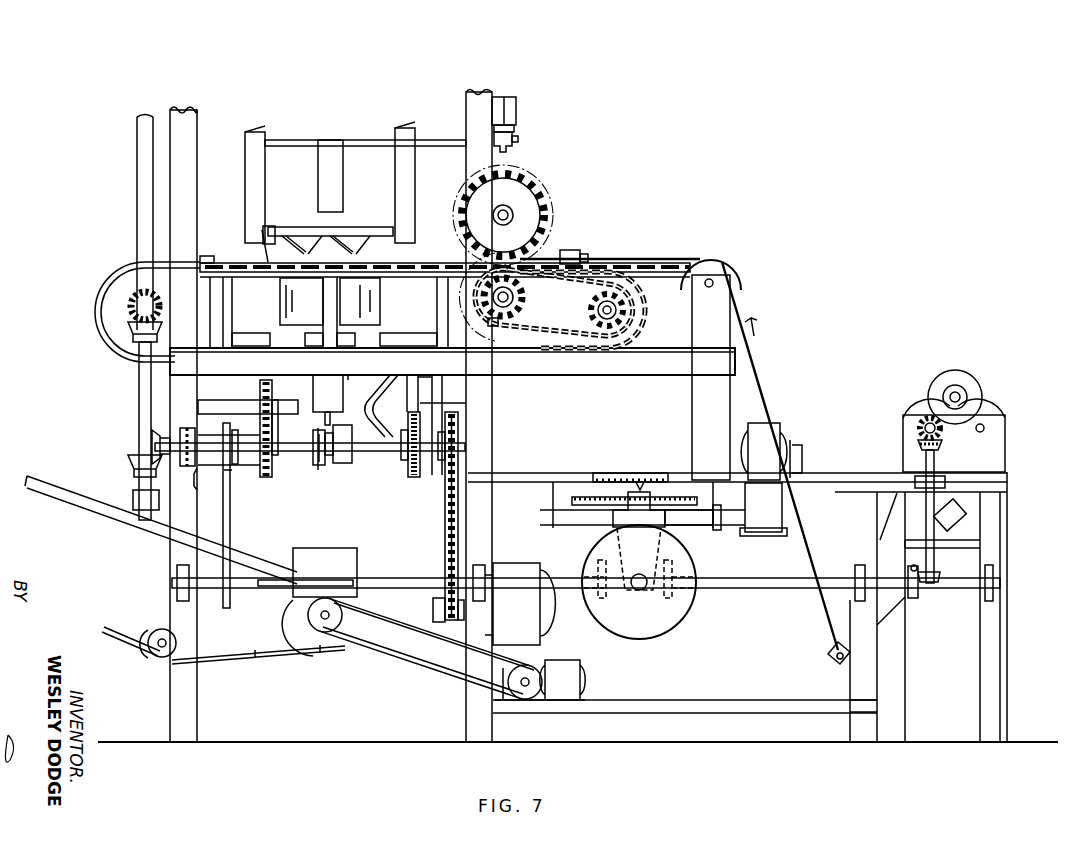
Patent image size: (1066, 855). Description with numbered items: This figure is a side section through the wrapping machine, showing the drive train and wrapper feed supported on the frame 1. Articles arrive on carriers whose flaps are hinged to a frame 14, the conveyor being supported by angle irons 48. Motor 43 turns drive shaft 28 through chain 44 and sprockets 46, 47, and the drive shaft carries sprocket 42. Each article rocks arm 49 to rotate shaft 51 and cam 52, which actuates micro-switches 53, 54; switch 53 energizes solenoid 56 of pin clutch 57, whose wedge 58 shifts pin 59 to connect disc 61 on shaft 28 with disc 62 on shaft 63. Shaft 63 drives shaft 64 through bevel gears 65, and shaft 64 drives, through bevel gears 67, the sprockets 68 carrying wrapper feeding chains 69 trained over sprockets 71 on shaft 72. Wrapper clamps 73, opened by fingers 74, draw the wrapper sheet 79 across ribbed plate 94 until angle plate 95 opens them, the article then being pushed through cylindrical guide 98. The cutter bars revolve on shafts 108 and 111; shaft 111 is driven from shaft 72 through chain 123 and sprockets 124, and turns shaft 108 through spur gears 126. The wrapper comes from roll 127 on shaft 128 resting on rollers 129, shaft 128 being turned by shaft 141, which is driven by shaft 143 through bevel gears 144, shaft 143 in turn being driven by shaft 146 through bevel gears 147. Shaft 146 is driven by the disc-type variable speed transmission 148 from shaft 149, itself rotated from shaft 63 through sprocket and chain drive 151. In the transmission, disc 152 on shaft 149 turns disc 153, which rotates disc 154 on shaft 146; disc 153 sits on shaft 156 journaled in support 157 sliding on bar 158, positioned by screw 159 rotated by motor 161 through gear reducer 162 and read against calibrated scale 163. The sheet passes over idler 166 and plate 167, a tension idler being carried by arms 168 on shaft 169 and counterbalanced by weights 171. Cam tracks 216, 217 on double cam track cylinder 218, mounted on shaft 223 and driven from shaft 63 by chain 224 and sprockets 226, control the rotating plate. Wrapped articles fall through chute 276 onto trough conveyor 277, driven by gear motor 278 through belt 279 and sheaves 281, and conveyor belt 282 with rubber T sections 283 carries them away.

The frame 1 is at (200, 716).
The frame 14 is at (330, 229).
The drive shaft 28 is at (362, 524).
The sprocket 42 is at (410, 470).
The motor 43 is at (542, 615).
The chain 44 is at (445, 538).
The sprocket 46 is at (445, 470).
The sprocket 47 is at (440, 600).
The angle irons 48 is at (262, 242).
The arm 49 is at (340, 183).
The shaft 51 is at (425, 140).
The cam 52 is at (520, 140).
The micro-switch 53 is at (498, 108).
The micro-switch 54 is at (514, 102).
The solenoid 56 is at (328, 393).
The pin clutch 57 is at (321, 474).
The wedge 58 is at (331, 420).
The pin 59 is at (314, 438).
The disc 61 is at (341, 465).
The disc 62 is at (277, 455).
The shaft 63 is at (236, 452).
The shaft 64 is at (138, 414).
The bevel gears 65 is at (132, 462).
The bevel gears 67 is at (128, 326).
The sprockets 68 is at (122, 284).
The wrapper feeding chains 69 is at (218, 262).
The sprockets 71 is at (636, 296).
The shaft 72 is at (607, 314).
The wrapper clamps 73 is at (578, 255).
The fingers 74 is at (596, 261).
The wrapper sheet 79 is at (767, 388).
The plate 94 is at (242, 272).
The angle plate 95 is at (204, 256).
The cylindrical guide 98 is at (372, 300).
The shaft 108 is at (508, 212).
The shaft 111 is at (512, 322).
The chain 123 is at (537, 326).
The sprockets 124 is at (503, 302).
The spur gears 126 is at (548, 222).
The roll 127 is at (950, 378).
The shaft 128 is at (962, 395).
The rollers 129 is at (990, 411).
The shaft 141 is at (916, 428).
The shaft 143 is at (925, 460).
The bevel gears 144 is at (917, 443).
The shaft 146 is at (790, 584).
The bevel gears 147 is at (936, 586).
The variable speed transmission device 148 is at (697, 631).
The shaft 149 is at (358, 582).
The sprocket and chain drive 151 is at (230, 522).
The disc 152 is at (604, 605).
The disc 153 is at (668, 605).
The disc 154 is at (672, 598).
The shaft 156 is at (640, 590).
The support 157 is at (618, 524).
The bar 158 is at (700, 527).
The screw 159 is at (576, 496).
The motor 161 is at (778, 432).
The gear reducer 162 is at (766, 522).
The calibrated scale 163 is at (614, 477).
The idler 166 is at (715, 276).
The plate 167 is at (668, 258).
The arms 168 is at (834, 662).
The shaft 169 is at (915, 570).
The weights 171 is at (972, 520).
The cam track 216 is at (410, 384).
The cam track 217 is at (392, 393).
The double cam track cylinder 218 is at (348, 379).
The shaft 223 is at (208, 410).
The chain 224 is at (232, 445).
The sprockets 226 is at (280, 390).
The chute 276 is at (346, 549).
The trough conveyor 277 is at (112, 522).
The gear motor 278 is at (582, 686).
The belt 279 is at (430, 657).
The sheaves 281 is at (318, 616).
The conveyor belt 282 is at (132, 648).
The rubber T sections 283 is at (262, 656).